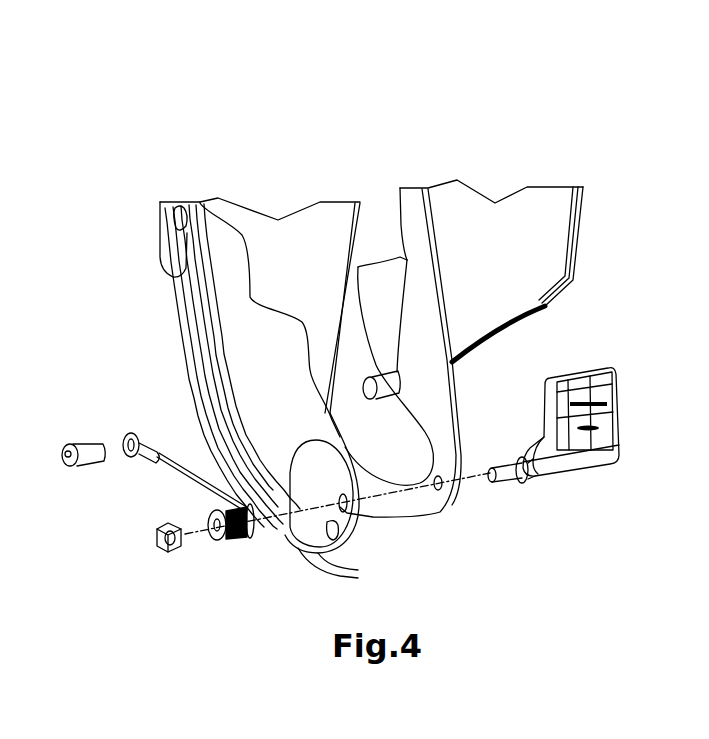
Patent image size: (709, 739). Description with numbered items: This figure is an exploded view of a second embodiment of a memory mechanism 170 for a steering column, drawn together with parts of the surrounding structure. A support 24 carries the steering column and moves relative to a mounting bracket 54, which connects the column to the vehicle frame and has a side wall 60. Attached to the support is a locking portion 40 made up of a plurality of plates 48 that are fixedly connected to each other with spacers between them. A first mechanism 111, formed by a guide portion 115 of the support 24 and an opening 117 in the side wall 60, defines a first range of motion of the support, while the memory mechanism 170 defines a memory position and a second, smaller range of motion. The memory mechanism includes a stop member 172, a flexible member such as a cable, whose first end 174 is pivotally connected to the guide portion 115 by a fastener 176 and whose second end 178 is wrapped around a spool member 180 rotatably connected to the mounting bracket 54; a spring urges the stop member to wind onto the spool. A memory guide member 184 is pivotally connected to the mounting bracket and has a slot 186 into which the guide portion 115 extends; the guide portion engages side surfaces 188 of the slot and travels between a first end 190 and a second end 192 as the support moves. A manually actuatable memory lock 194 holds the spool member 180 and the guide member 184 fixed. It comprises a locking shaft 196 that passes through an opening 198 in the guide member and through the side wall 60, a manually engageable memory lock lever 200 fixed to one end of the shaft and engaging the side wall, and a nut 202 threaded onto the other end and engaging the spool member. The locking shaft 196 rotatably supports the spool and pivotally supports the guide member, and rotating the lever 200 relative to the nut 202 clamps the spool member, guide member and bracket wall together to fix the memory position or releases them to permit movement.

The support 24 is at (466, 228).
The locking portion 40 is at (520, 220).
The plates 48 is at (556, 200).
The mounting bracket 54 is at (255, 232).
The side wall 60 is at (300, 227).
The first mechanism 111 is at (443, 152).
The guide portion 115 is at (388, 376).
The opening 117 is at (355, 237).
The memory mechanism 170 is at (594, 521).
The stop member 172 is at (163, 465).
The first end 174 is at (133, 438).
The fastener 176 is at (93, 460).
The second end 178 is at (238, 540).
The spool member 180 is at (222, 540).
The memory guide member 184 is at (312, 560).
The slot 186 is at (293, 542).
The side surfaces 188 is at (277, 470).
The first end 190 is at (353, 530).
The second end 192 is at (170, 227).
The memory lock 194 is at (622, 470).
The locking shaft 196 is at (512, 483).
The opening 198 is at (358, 517).
The memory lock lever 200 is at (590, 380).
The nut 202 is at (160, 548).